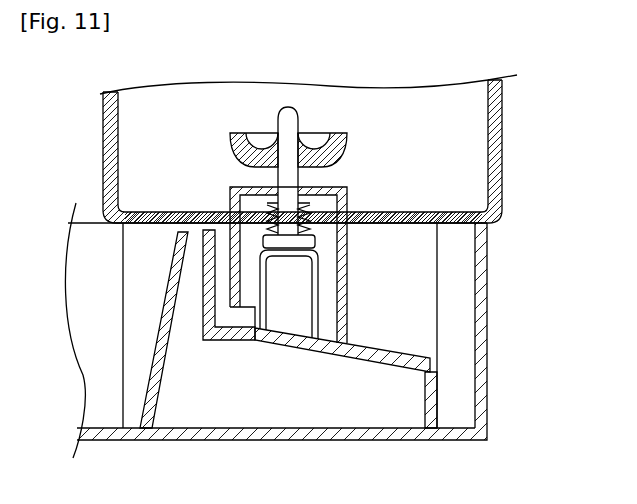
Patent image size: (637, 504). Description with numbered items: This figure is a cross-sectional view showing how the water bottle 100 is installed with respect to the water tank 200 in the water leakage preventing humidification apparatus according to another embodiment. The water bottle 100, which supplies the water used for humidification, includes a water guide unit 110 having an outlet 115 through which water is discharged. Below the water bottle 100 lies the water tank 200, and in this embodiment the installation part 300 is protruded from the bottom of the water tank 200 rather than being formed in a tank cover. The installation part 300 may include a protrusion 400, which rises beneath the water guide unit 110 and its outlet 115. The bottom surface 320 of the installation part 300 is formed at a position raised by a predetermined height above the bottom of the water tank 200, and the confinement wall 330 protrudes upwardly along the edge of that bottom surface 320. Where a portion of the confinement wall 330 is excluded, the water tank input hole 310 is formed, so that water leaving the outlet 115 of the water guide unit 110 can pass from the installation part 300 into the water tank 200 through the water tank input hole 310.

The water bottle 100 is at (502, 103).
The water guide unit 110 is at (348, 205).
The protrusion 400 is at (318, 277).
The water tank 200 is at (487, 320).
The water tank input hole 310 is at (420, 340).
The installation part 300 is at (147, 365).
The confinement wall 330 is at (198, 282).
The outlet 115 is at (233, 340).
The bottom surface 320 is at (362, 360).